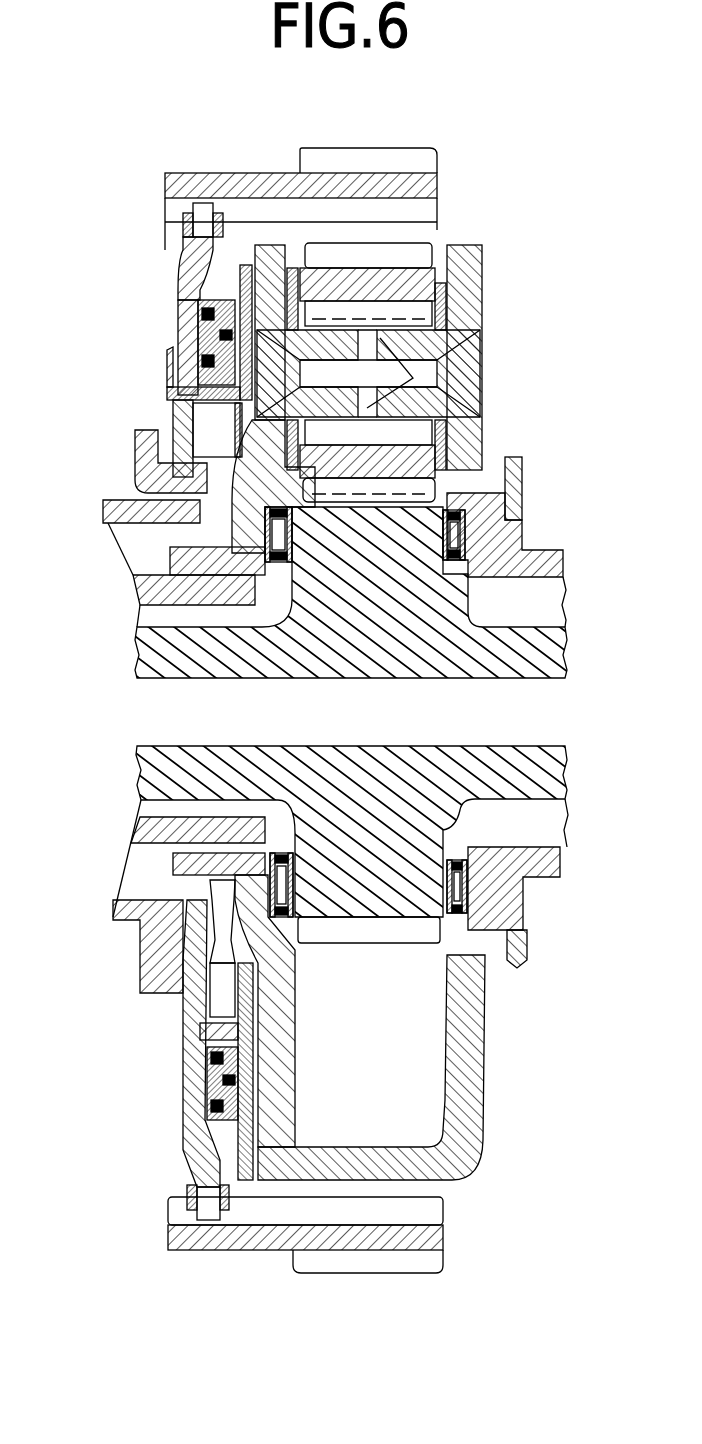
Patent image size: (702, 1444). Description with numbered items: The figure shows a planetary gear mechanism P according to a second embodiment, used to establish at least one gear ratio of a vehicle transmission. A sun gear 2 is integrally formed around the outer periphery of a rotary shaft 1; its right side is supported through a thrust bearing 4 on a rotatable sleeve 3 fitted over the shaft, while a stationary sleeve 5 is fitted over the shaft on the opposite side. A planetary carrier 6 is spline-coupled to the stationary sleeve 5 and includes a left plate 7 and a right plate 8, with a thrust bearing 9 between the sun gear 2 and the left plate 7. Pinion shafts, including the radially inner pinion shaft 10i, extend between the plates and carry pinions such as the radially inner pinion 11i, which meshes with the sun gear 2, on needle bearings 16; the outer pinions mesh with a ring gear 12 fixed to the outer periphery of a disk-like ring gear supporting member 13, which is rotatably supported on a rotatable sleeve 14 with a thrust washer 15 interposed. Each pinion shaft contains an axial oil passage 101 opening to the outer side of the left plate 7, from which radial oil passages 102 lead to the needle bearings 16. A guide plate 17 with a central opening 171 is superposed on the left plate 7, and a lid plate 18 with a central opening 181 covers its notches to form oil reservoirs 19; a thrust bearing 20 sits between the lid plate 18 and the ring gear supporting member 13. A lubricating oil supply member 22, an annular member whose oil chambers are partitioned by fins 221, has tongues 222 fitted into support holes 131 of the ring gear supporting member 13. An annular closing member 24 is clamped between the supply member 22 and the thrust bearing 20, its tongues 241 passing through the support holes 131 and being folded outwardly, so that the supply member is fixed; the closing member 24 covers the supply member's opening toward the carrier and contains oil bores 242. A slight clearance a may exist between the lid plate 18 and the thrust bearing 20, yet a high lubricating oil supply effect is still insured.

The rotary shaft 1 is at (552, 652).
The sun gear 2 is at (388, 933).
The rotatable sleeve 3 is at (553, 568).
The thrust bearing 4 is at (520, 878).
The stationary sleeve 5 is at (136, 597).
The planetary carrier 6 is at (492, 1040).
The left plate 7 is at (190, 266).
The right plate 8 is at (485, 251).
The thrust bearing 9 is at (210, 890).
The oil passage 101 is at (317, 385).
The oil passages 102 is at (413, 378).
The inner pinion shaft 10i is at (412, 373).
The radially inner pinion 11i is at (422, 255).
The ring gear 12 is at (427, 210).
The ring gear supporting member 13 is at (178, 288).
The support holes 131 is at (227, 405).
The rotatable sleeve 14 is at (103, 512).
The thrust washer 15 is at (156, 423).
The needle bearings 16 is at (470, 315).
The guide plate 17 is at (270, 1080).
The central opening 171 is at (262, 1037).
The lid plate 18 is at (225, 1152).
The central opening 181 is at (207, 1084).
The oil reservoirs 19 is at (272, 245).
The thrust bearing 20 is at (198, 335).
The lubricating oil supply member 22 is at (217, 480).
The fins 221 is at (240, 975).
The tongues 222 is at (173, 400).
The closing member 24 is at (262, 998).
The tongues 241 is at (170, 352).
The oil bores 242 is at (245, 400).
The planetary gear mechanism P is at (417, 373).
The clearance a is at (183, 1130).